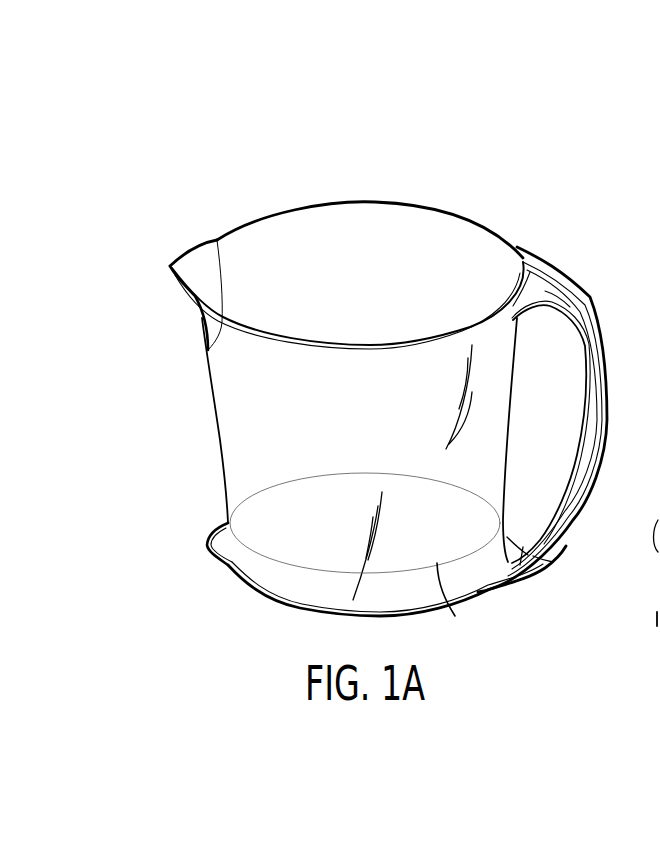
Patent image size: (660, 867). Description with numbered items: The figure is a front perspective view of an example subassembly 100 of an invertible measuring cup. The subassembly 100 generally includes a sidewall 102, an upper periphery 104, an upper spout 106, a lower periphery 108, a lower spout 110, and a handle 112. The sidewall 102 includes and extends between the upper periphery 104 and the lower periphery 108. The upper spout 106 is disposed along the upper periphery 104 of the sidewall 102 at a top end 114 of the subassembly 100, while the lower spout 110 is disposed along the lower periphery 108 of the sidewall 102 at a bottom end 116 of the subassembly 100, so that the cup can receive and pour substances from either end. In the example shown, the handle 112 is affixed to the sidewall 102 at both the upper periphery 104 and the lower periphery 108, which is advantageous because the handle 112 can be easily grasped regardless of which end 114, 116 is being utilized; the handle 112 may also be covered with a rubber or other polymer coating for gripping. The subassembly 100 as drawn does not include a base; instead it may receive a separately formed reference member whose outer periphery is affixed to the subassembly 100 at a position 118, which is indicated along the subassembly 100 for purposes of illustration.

The subassembly 100 is at (240, 128).
The sidewall 102 is at (227, 472).
The upper periphery 104 is at (362, 200).
The upper spout 106 is at (196, 253).
The lower periphery 108 is at (258, 602).
The lower spout 110 is at (207, 547).
The handle 112 is at (611, 413).
The top end 114 is at (501, 222).
The bottom end 116 is at (478, 605).
The position 118 is at (455, 616).